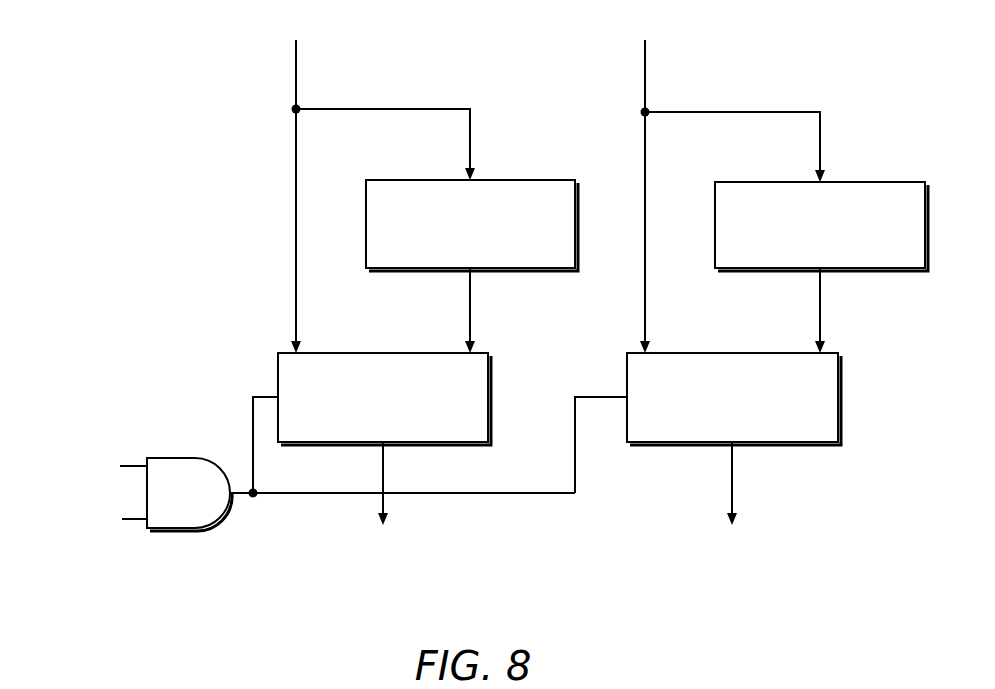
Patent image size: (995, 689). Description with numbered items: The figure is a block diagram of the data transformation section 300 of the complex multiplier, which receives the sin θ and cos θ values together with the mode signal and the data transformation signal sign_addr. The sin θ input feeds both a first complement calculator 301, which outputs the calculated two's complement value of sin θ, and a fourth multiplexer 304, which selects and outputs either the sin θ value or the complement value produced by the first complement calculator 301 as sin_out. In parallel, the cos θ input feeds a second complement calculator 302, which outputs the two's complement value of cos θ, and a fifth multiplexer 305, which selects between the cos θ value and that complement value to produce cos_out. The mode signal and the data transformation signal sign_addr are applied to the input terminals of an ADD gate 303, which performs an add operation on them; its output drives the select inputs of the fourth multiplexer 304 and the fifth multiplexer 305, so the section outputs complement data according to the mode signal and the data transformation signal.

The data transformation section 300 is at (767, 57).
The first complement calculator 301 is at (539, 181).
The second complement calculator 302 is at (887, 181).
The ADD gate 303 is at (172, 455).
The fourth multiplexer 304 is at (382, 351).
The fifth multiplexer 305 is at (732, 351).